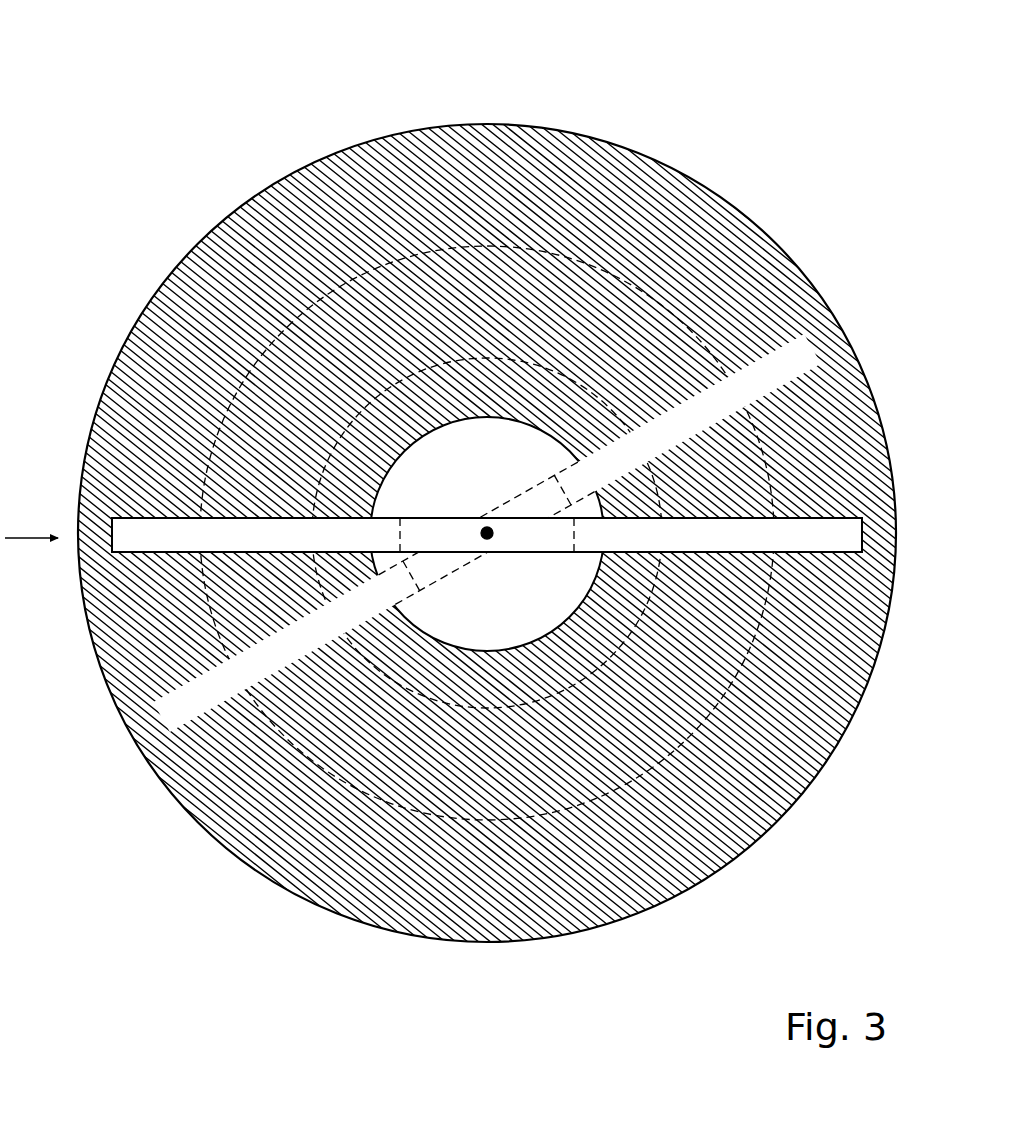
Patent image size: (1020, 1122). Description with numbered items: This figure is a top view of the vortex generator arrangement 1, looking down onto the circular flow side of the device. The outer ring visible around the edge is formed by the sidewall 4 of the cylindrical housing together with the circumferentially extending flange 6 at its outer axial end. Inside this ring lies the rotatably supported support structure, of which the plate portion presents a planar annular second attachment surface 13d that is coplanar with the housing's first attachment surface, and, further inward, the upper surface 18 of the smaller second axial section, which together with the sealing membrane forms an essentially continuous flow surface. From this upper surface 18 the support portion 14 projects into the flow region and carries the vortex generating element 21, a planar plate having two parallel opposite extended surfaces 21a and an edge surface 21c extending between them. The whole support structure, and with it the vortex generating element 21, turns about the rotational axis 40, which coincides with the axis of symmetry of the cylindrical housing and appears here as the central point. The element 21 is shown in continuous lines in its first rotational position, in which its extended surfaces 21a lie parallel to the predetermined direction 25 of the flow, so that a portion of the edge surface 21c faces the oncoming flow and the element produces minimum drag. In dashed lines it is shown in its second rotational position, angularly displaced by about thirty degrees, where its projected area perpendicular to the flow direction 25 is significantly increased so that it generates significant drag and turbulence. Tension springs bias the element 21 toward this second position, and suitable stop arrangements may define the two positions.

The vortex generator arrangement 1 is at (467, 475).
The sidewall 4 is at (487, 516).
The flange 6 is at (698, 213).
The second attachment surface 13d is at (327, 268).
The upper surface of the second axial section 18 is at (483, 435).
The support portion 14 is at (422, 530).
The vortex generating element 21 is at (486, 533).
The extended surface 21a is at (380, 512).
The edge surface 21c is at (82, 492).
The predetermined direction 25 is at (28, 542).
The rotational axis 40 is at (487, 539).